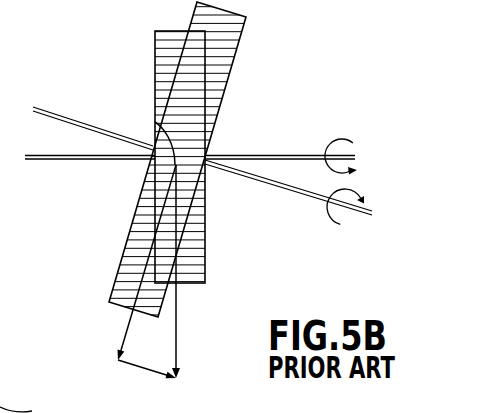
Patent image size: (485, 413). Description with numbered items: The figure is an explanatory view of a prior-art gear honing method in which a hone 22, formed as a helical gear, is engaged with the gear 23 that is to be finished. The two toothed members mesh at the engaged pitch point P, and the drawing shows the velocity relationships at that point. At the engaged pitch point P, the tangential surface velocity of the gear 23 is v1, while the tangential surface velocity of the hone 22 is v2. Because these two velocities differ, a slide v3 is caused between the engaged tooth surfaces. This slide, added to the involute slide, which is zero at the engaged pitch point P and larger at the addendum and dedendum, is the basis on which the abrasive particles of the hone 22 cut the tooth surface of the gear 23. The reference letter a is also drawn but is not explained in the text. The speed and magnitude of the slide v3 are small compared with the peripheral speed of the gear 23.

The hone 22 is at (242, 19).
The gear 23 is at (157, 33).
The engaged pitch point P is at (157, 126).
The surface velocity of the gear v1 is at (178, 312).
The surface velocity of the hone v2 is at (119, 338).
The slide v3 is at (135, 372).
The angle a is at (36, 411).